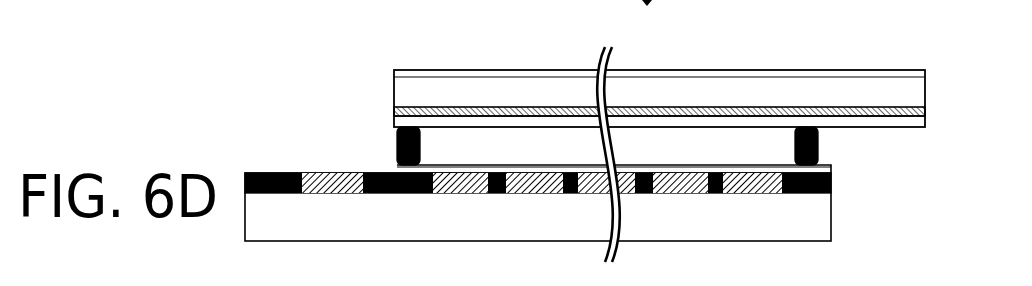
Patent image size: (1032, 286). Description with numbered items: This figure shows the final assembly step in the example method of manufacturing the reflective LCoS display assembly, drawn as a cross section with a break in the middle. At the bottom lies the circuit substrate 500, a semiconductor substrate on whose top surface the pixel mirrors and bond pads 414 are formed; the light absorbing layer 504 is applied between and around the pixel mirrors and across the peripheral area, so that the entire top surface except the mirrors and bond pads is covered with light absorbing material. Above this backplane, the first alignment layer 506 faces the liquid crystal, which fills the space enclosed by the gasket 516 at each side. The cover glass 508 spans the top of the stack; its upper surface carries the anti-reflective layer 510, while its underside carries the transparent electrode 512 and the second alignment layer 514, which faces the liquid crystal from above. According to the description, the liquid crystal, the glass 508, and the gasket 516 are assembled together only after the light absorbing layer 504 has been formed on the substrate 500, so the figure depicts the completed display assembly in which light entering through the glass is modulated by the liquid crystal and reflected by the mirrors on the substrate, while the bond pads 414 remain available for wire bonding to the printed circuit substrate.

The circuit substrate 500 is at (812, 218).
The light absorbing layer 504 is at (506, 155).
The first alignment layer 506 is at (395, 168).
The cover glass 508 is at (478, 91).
The anti-reflective layer 510 is at (707, 73).
The transparent electrode 512 is at (397, 108).
The second alignment layer 514 is at (397, 120).
The gasket 516 is at (397, 137).
The bond pads 414 is at (306, 177).